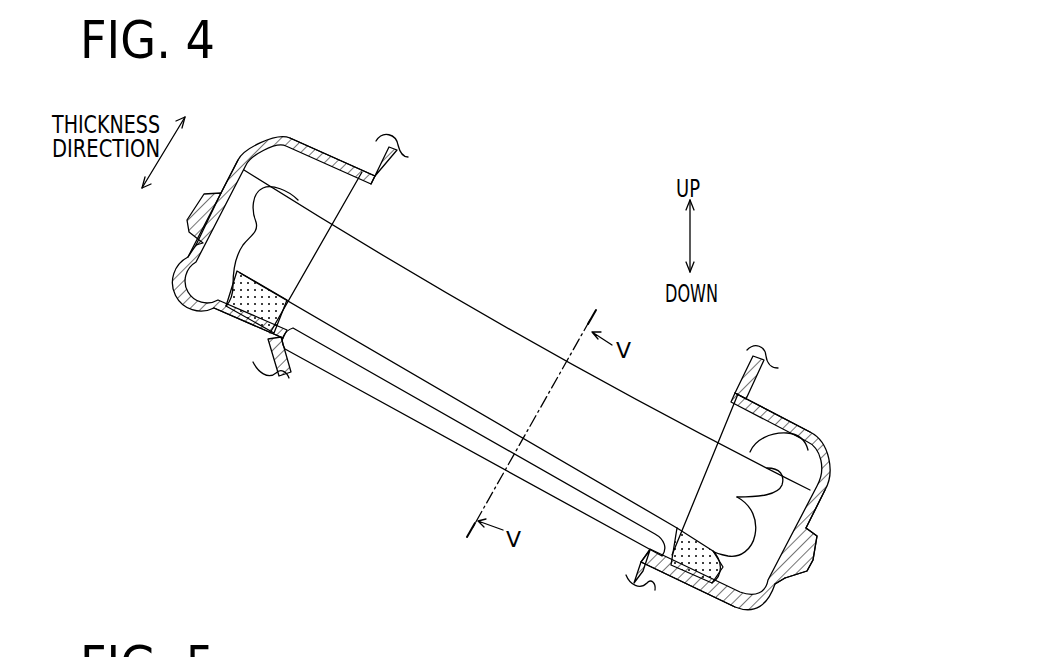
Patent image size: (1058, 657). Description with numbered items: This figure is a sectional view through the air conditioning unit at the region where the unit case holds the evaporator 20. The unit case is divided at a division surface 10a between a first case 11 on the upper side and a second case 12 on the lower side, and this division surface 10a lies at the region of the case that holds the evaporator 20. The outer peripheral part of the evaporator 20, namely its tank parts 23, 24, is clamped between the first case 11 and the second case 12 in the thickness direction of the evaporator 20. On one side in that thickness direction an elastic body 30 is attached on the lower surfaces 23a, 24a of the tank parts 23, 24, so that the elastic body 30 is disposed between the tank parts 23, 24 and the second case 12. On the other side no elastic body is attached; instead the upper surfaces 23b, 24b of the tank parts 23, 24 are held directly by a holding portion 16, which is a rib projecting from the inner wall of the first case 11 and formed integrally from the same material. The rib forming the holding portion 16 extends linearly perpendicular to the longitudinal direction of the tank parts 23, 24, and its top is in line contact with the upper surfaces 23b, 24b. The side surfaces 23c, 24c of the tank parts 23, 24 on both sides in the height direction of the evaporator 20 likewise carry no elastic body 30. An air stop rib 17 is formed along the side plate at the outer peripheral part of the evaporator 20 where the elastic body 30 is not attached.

The division surface 10a is at (198, 207).
The first case 11 is at (237, 163).
The second case 12 is at (183, 273).
The holding portion 16 is at (345, 205).
The air stop rib 17 is at (427, 417).
The evaporator 20 is at (511, 323).
The tank part 23 is at (247, 190).
The lower surface of tank part 23a is at (233, 310).
The upper surface of tank part 23b is at (328, 195).
The side surface of tank part 23c is at (183, 232).
The tank part 24 is at (814, 505).
The lower surface of tank part 24a is at (757, 602).
The upper surface of tank part 24b is at (775, 438).
The side surface of tank part 24c is at (787, 575).
The elastic body 30 is at (253, 318).